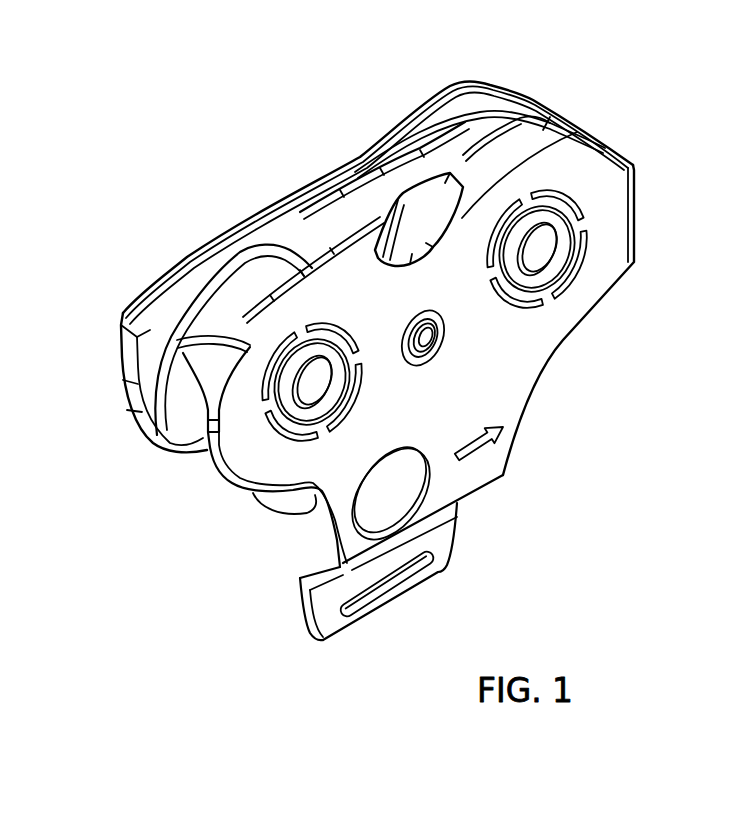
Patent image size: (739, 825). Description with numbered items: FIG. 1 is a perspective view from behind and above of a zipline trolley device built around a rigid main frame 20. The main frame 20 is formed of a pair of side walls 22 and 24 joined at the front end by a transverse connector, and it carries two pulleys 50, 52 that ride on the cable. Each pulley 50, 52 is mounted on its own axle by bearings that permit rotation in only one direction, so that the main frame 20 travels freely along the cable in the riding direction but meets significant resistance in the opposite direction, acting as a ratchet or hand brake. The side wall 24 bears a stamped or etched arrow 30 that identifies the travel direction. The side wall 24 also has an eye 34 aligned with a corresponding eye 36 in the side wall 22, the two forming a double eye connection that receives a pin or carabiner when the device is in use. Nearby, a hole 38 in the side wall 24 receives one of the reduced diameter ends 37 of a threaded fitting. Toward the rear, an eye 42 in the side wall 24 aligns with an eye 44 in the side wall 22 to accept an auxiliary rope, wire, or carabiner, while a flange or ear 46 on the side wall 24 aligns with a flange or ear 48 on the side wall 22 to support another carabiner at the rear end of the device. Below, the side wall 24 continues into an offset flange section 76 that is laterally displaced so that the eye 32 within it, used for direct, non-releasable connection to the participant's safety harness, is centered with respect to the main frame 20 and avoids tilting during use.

The main frame 20 is at (191, 529).
The side wall 22 is at (480, 82).
The side wall 24 is at (545, 356).
The arrow 30 is at (497, 443).
The eye 32 is at (373, 590).
The eye 34 is at (430, 498).
The eye 36 is at (303, 495).
The reduced diameter end 37 is at (426, 364).
The hole 38 is at (437, 352).
The eye 42 is at (445, 200).
The eye 44 is at (370, 190).
The flange or ear 46 is at (206, 340).
The flange or ear 48 is at (123, 312).
The pulley 50 is at (250, 275).
The pulley 52 is at (413, 210).
The offset flange section 76 is at (457, 540).